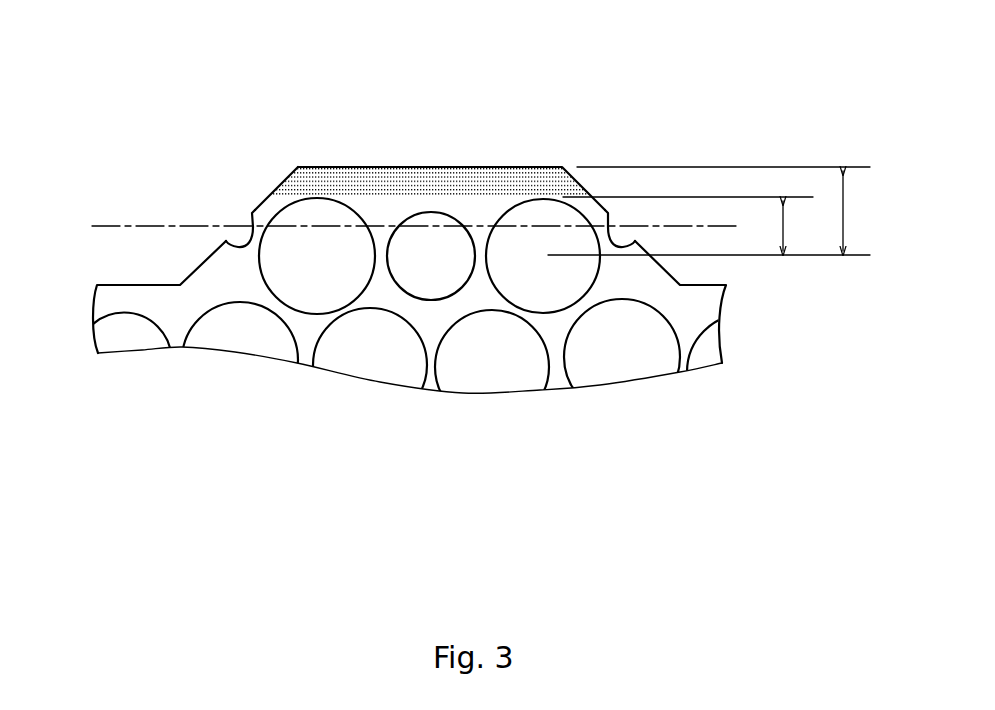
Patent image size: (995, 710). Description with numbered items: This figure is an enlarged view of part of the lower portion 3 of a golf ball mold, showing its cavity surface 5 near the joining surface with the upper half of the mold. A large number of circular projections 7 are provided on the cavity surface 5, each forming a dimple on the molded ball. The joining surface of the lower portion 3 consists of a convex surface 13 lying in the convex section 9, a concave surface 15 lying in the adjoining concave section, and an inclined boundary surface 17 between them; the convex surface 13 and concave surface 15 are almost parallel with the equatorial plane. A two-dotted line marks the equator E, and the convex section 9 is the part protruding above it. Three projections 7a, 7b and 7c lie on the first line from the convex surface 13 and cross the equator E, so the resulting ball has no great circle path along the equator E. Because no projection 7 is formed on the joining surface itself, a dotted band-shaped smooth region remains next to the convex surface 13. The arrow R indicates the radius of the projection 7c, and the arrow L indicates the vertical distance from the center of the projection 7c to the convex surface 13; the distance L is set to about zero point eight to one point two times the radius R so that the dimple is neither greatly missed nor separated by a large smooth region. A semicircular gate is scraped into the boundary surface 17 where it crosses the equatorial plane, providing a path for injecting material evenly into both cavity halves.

The lower portion 3 is at (826, 36).
The cavity surface 5 is at (206, 273).
The projection 7 is at (133, 337).
The projection 7a is at (302, 285).
The projection 7b is at (440, 275).
The projection 7c is at (547, 282).
The convex section 9 is at (390, 217).
The convex surface 13 is at (503, 166).
The concave surface 15 is at (700, 283).
The boundary surface 17 is at (266, 200).
The equator E is at (112, 226).
The radius R is at (709, 226).
The distance L is at (723, 209).